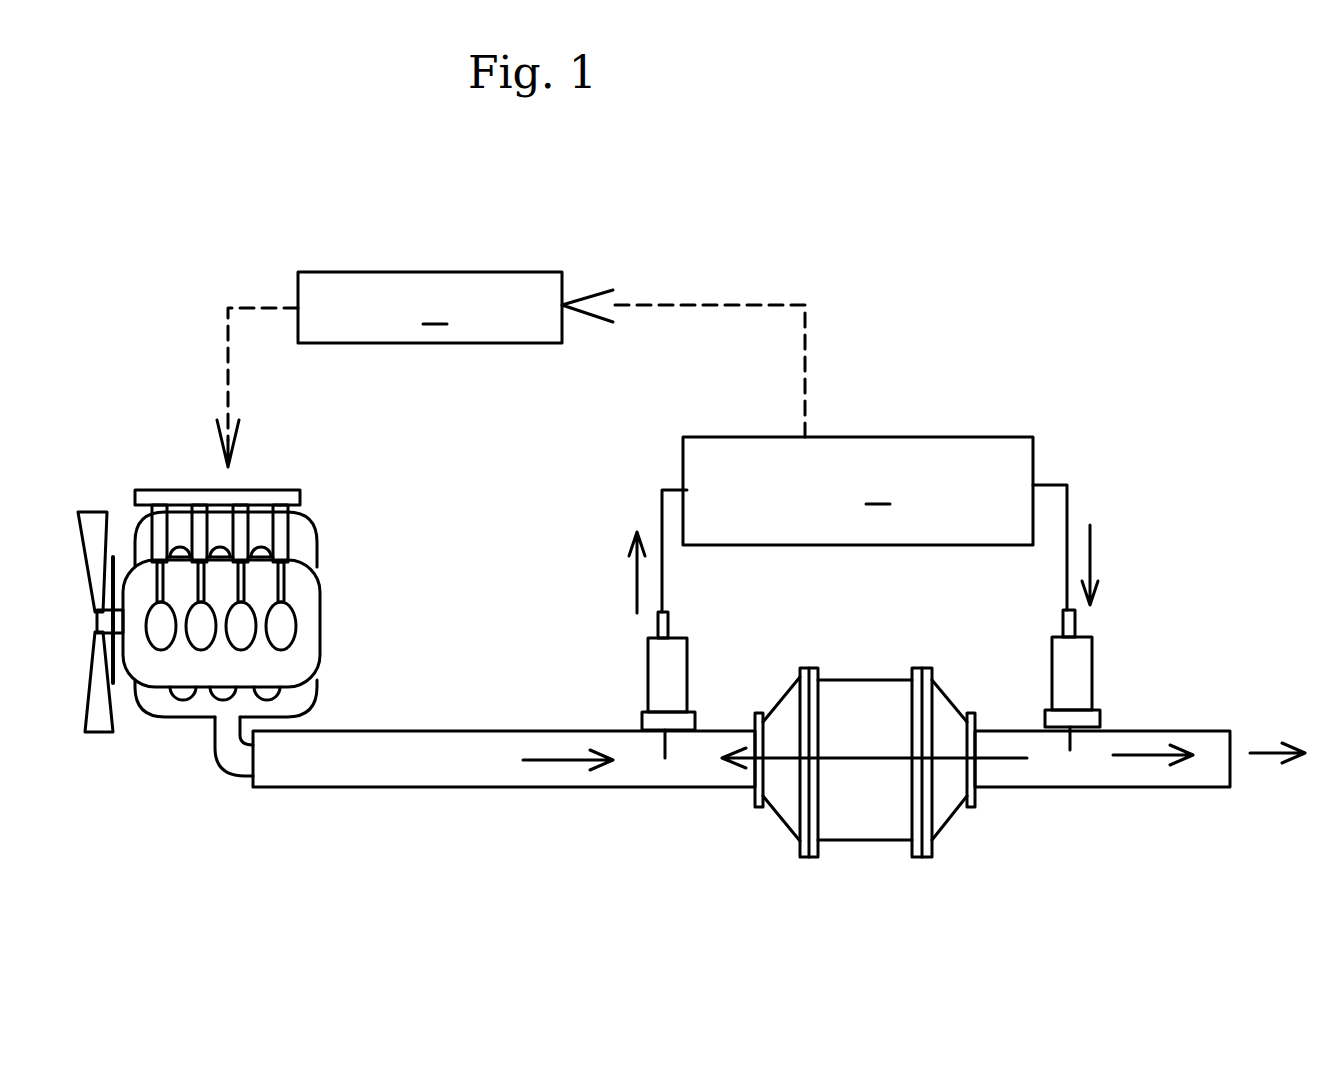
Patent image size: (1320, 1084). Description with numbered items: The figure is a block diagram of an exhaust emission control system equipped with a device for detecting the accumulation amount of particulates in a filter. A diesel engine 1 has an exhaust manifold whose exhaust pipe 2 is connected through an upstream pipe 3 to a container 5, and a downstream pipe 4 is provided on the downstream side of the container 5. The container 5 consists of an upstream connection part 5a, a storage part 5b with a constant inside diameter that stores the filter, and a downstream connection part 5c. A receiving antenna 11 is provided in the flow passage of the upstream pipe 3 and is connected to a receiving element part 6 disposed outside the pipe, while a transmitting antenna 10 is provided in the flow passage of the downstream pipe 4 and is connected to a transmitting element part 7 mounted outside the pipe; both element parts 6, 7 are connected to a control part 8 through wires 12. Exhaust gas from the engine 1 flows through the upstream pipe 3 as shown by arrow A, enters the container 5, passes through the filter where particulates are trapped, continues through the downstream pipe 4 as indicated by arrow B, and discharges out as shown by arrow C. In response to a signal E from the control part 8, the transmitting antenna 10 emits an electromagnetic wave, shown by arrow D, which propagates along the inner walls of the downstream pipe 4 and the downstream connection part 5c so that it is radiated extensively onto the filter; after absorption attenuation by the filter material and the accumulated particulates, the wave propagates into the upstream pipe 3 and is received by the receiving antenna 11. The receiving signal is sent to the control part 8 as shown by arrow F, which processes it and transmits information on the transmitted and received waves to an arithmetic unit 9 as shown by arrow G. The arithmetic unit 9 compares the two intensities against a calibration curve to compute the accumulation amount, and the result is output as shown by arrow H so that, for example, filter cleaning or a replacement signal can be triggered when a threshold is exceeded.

The diesel engine 1 is at (307, 588).
The exhaust pipe 2 is at (233, 772).
The upstream pipe 3 is at (415, 747).
The downstream pipe 4 is at (1200, 773).
The container 5 is at (881, 729).
The upstream connection part 5a is at (783, 707).
The storage part 5b is at (838, 690).
The downstream connection part 5c is at (940, 703).
The receiving element part 6 is at (675, 672).
The transmitting element part 7 is at (1085, 668).
The control part 8 is at (858, 491).
The arithmetic unit 9 is at (430, 307).
The transmitting antenna 10 is at (1070, 748).
The receiving antenna 11 is at (665, 740).
The wires 12 is at (667, 583).
The arrow A is at (543, 760).
The exhaust gas flow downstream B is at (1135, 757).
The arrow C is at (1267, 752).
The arrow D is at (877, 760).
The signal E is at (1092, 545).
The arrow F is at (633, 582).
The arrow G is at (772, 303).
The arrow H is at (250, 310).